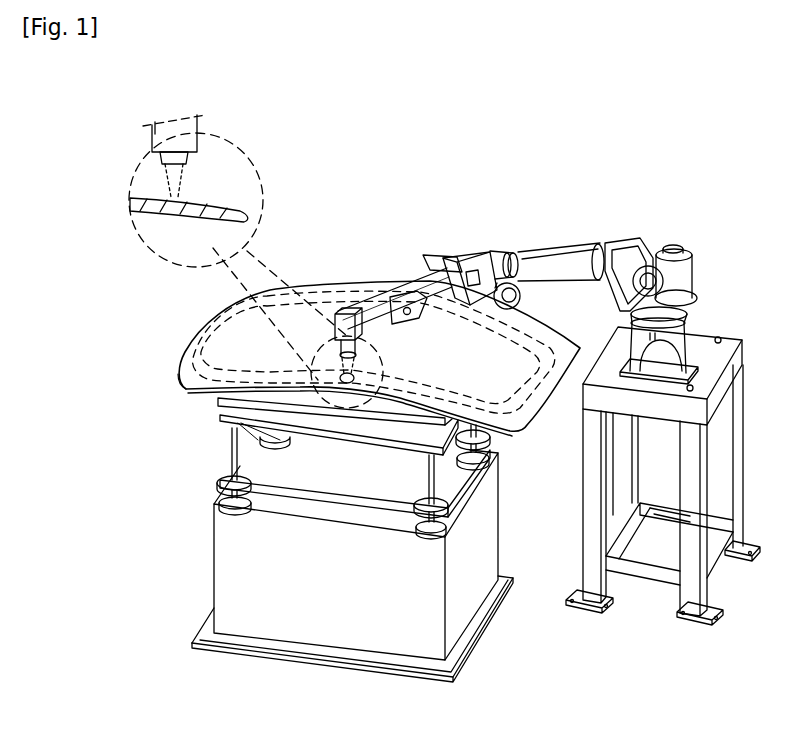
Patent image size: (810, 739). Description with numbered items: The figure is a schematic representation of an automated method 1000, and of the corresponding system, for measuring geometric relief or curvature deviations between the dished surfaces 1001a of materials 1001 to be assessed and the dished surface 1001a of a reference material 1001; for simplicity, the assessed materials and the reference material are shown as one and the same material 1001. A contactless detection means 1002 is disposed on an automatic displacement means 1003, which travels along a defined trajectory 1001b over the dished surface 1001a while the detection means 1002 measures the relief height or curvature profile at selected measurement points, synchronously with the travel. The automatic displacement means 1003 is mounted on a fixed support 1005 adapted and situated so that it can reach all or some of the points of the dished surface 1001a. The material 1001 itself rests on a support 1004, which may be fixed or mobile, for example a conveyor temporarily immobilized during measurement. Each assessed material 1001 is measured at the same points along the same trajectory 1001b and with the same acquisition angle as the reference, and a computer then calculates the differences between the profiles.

The automated method 1000 is at (470, 156).
The material 1001 is at (193, 337).
The dished surface 1001a is at (336, 282).
The trajectory 1001b is at (180, 370).
The contactless detection means 1002 is at (152, 128).
The automatic displacement means 1003 is at (551, 250).
The support 1004 is at (217, 573).
The fixed support 1005 is at (662, 575).